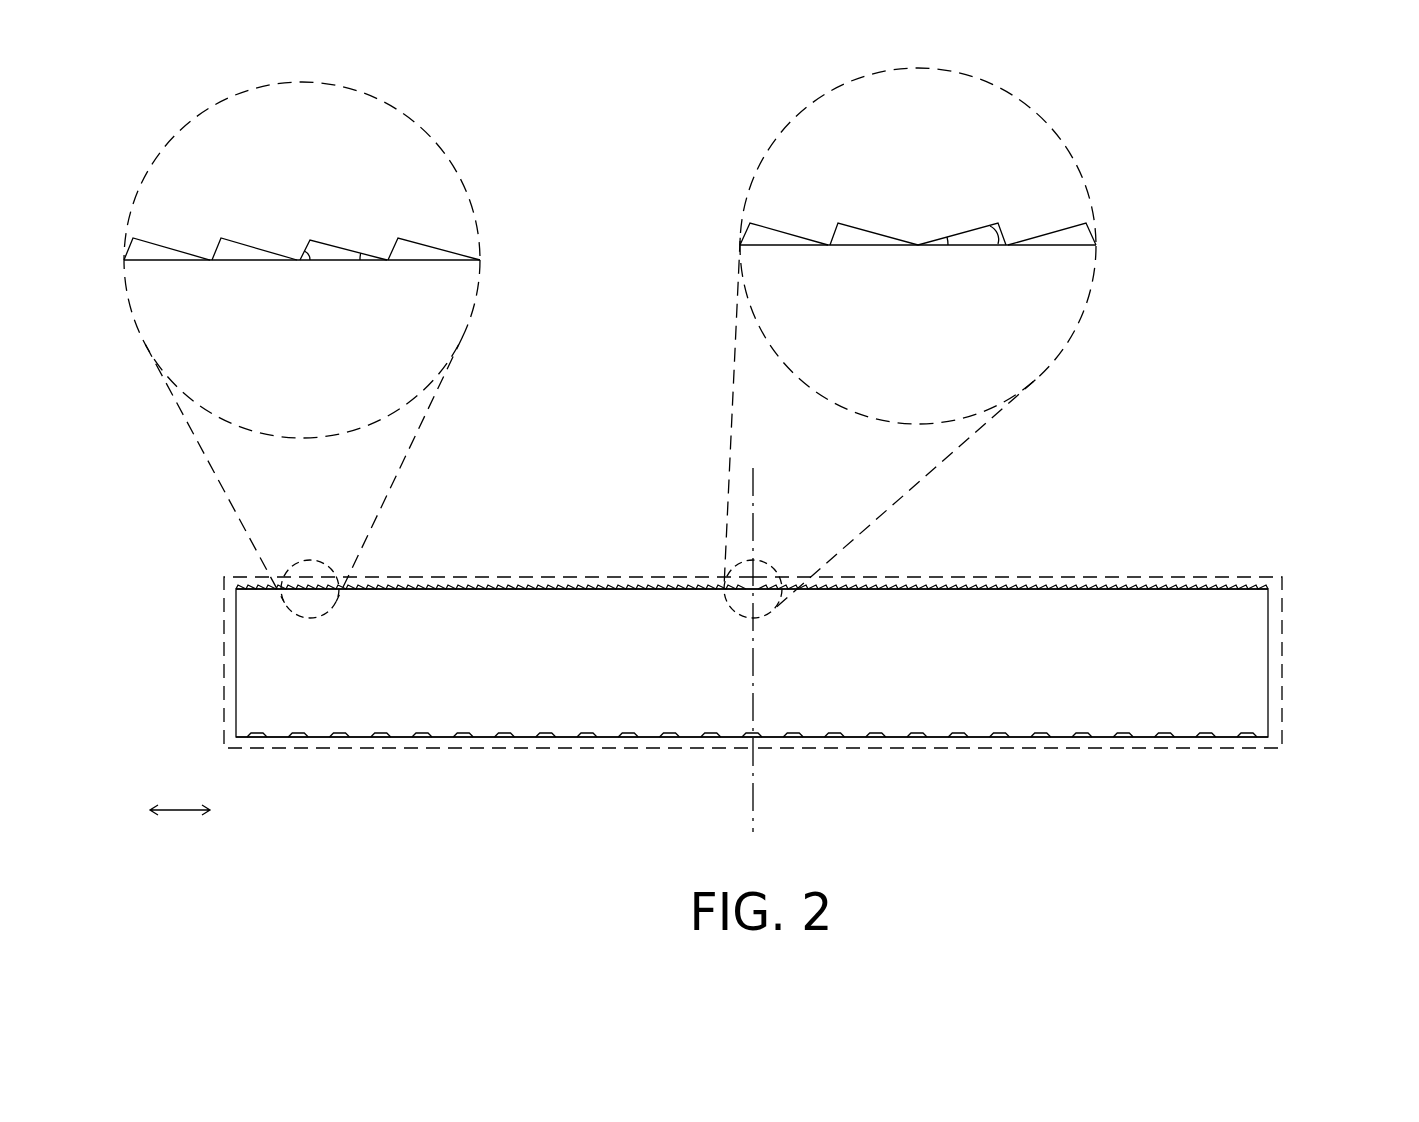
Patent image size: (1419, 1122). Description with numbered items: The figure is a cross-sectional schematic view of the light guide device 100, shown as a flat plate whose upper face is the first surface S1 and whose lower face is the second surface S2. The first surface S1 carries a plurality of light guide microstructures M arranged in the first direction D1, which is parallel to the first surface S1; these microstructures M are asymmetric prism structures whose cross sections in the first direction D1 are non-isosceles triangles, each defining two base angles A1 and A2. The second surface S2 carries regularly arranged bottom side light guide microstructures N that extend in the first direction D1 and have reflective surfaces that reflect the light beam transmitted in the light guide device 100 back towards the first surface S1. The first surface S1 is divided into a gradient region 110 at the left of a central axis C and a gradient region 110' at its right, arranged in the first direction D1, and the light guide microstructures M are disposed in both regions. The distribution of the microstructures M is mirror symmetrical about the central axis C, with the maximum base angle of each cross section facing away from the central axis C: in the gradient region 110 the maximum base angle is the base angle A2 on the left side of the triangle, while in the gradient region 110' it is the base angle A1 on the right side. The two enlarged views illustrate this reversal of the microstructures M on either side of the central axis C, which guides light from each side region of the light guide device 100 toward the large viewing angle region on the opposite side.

The light guide device 100 is at (1410, 852).
The gradient region 110 is at (443, 662).
The gradient region 110' is at (1066, 662).
The first surface S1 is at (1237, 586).
The second surface S2 is at (1237, 740).
The light guide microstructures M is at (240, 246).
The bottom side light guide microstructures N is at (1126, 740).
The base angle A1 is at (358, 262).
The base angle A2 is at (307, 257).
The central axis C is at (755, 631).
The first direction D1 is at (180, 833).